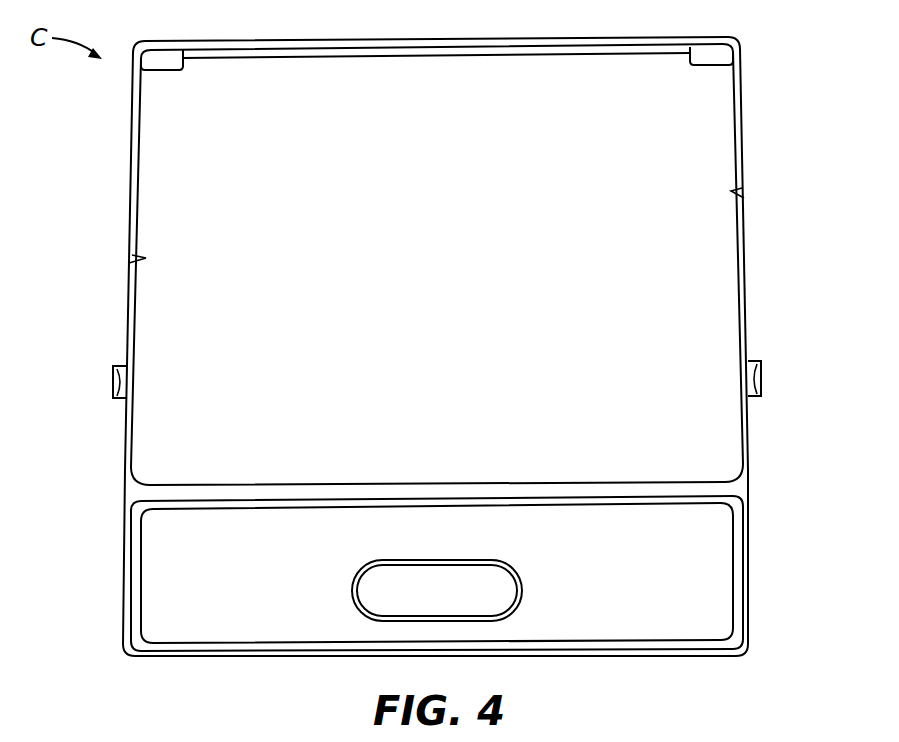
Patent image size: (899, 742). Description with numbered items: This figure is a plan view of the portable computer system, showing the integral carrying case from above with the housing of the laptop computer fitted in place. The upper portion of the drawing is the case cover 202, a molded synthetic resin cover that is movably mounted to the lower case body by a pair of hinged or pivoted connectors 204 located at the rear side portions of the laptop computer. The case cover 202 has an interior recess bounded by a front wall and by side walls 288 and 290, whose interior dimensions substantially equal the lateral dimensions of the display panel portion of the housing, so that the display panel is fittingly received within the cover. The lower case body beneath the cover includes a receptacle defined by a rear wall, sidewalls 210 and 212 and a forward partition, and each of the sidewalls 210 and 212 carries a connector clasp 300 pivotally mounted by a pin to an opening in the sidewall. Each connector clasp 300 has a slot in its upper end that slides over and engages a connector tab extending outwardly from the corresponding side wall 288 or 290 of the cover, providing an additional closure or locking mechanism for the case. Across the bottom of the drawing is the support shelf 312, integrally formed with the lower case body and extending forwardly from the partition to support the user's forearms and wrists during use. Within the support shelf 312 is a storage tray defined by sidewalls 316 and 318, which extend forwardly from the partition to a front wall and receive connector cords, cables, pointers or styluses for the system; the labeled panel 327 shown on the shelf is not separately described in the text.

The case cover 202 is at (474, 295).
The hinged connectors 204 is at (172, 50).
The sidewall 210 is at (129, 207).
The sidewall 212 is at (746, 273).
The side wall 288 is at (130, 262).
The side wall 290 is at (746, 197).
The connector clasp 300 is at (112, 390).
The support shelf 312 is at (758, 501).
The sidewall 316 is at (126, 578).
The sidewall 318 is at (746, 582).
The lower inner panel 327 is at (633, 560).